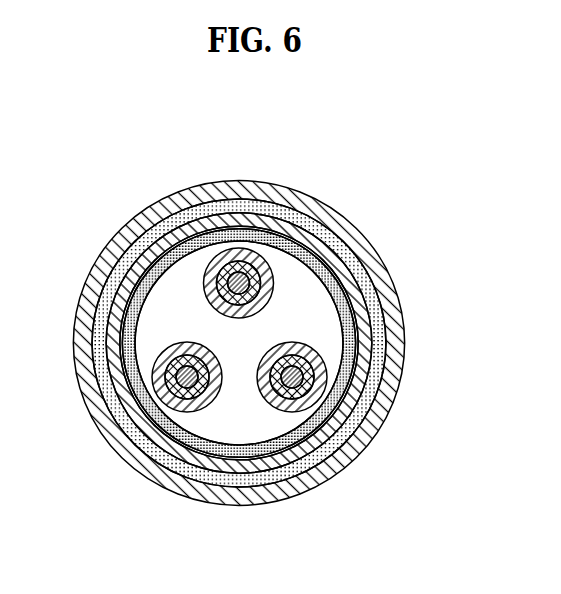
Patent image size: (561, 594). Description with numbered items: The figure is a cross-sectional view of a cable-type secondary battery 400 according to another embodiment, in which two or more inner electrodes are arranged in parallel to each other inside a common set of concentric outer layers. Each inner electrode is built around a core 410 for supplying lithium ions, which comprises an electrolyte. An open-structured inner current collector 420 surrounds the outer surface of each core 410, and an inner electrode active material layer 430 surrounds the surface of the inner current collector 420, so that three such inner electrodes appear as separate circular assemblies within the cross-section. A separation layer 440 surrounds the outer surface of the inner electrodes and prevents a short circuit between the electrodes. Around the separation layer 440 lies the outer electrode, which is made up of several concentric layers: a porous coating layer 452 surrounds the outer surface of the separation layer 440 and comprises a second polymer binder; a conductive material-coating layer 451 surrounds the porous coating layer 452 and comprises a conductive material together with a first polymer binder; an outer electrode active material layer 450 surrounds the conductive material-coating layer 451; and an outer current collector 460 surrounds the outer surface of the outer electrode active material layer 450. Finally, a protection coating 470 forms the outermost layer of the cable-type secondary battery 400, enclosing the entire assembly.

The cable-type secondary battery 400 is at (261, 315).
The core for supplying lithium ions 410 is at (240, 280).
The inner current collector 420 is at (250, 262).
The inner electrode active material layer 430 is at (268, 262).
The separation layer 440 is at (239, 343).
The outer electrode active material layer 450 is at (239, 343).
The conductive material-coating layer 451 is at (239, 343).
The porous coating layer 452 is at (238, 343).
The outer current collector 460 is at (239, 343).
The protection coating 470 is at (238, 343).